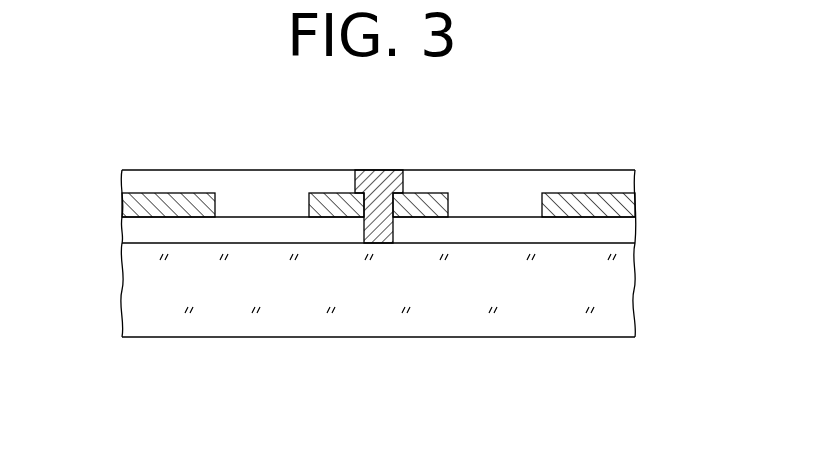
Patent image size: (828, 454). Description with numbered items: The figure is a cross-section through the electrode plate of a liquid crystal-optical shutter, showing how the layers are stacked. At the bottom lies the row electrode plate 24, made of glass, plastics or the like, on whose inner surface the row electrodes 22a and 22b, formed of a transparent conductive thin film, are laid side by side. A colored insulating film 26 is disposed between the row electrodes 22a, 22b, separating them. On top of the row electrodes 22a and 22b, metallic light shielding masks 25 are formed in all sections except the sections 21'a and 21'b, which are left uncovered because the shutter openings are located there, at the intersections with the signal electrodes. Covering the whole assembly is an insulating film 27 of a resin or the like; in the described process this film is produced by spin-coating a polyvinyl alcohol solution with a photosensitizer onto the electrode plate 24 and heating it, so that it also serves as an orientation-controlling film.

The row electrode plate 24 is at (615, 292).
The row electrode 22a is at (232, 228).
The row electrode 22b is at (530, 228).
The insulating film 27 is at (625, 180).
The section for shutter opening 21'a is at (262, 172).
The section for shutter opening 21'b is at (495, 172).
The metallic light shielding mask 25 is at (128, 205).
The colored insulating film 26 is at (378, 177).